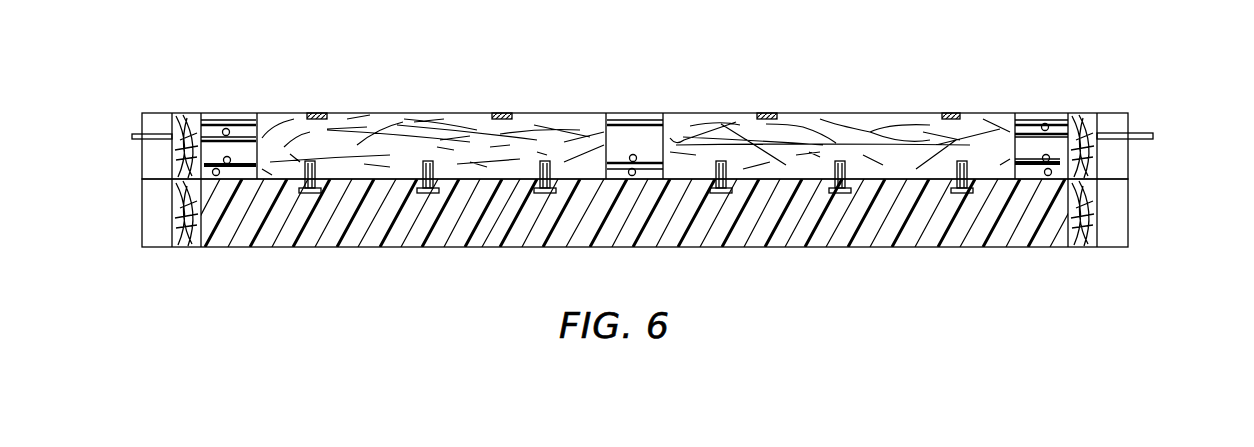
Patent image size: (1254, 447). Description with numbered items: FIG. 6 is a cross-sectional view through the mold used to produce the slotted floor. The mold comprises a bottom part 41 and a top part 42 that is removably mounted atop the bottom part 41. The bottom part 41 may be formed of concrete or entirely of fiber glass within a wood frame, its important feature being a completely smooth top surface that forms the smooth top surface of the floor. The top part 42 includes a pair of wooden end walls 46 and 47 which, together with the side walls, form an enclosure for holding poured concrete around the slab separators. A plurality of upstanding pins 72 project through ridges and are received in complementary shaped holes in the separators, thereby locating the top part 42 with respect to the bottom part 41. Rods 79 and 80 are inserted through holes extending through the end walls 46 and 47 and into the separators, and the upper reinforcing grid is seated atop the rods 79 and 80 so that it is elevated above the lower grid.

The bottom part 41 is at (1115, 207).
The top part 42 is at (1117, 162).
The end wall 46 is at (162, 150).
The end wall 47 is at (1127, 137).
The upstanding pins 72 is at (262, 231).
The rods 79 is at (247, 127).
The rods 80 is at (1018, 137).